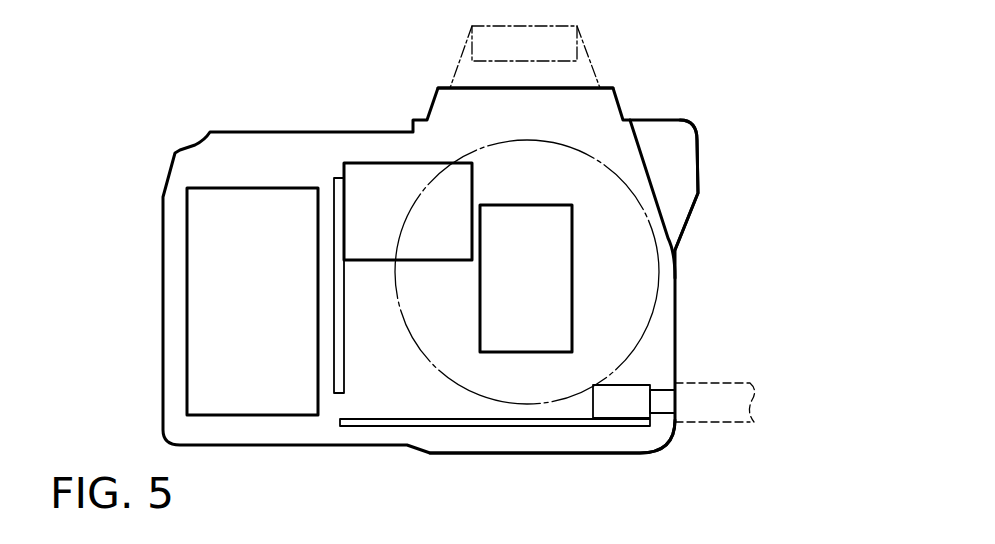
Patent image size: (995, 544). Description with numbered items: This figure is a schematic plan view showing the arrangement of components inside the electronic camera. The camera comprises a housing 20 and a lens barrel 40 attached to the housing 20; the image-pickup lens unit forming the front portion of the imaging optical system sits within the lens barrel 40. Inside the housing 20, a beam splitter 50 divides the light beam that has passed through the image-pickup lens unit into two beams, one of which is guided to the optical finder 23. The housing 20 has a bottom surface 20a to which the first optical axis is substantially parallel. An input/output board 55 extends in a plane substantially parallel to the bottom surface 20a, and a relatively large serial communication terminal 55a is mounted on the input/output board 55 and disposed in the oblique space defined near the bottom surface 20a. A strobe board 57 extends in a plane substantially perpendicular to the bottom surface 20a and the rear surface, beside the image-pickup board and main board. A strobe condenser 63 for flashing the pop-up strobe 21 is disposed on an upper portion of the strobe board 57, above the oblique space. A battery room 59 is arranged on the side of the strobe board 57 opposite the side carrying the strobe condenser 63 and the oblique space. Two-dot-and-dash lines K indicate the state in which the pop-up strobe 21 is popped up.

The housing 20 is at (680, 316).
The bottom surface 20a is at (634, 447).
The pop-up strobe 21 is at (597, 103).
The optical finder 23 is at (673, 148).
The two-dot-and-dash lines K is at (456, 76).
The lens barrel 40 is at (592, 138).
The beam splitter 50 is at (558, 288).
The input/output board 55 is at (398, 418).
The serial communication terminal 55a is at (628, 393).
The strobe board 57 is at (335, 178).
The battery room 59 is at (252, 212).
The strobe condenser 63 is at (383, 178).